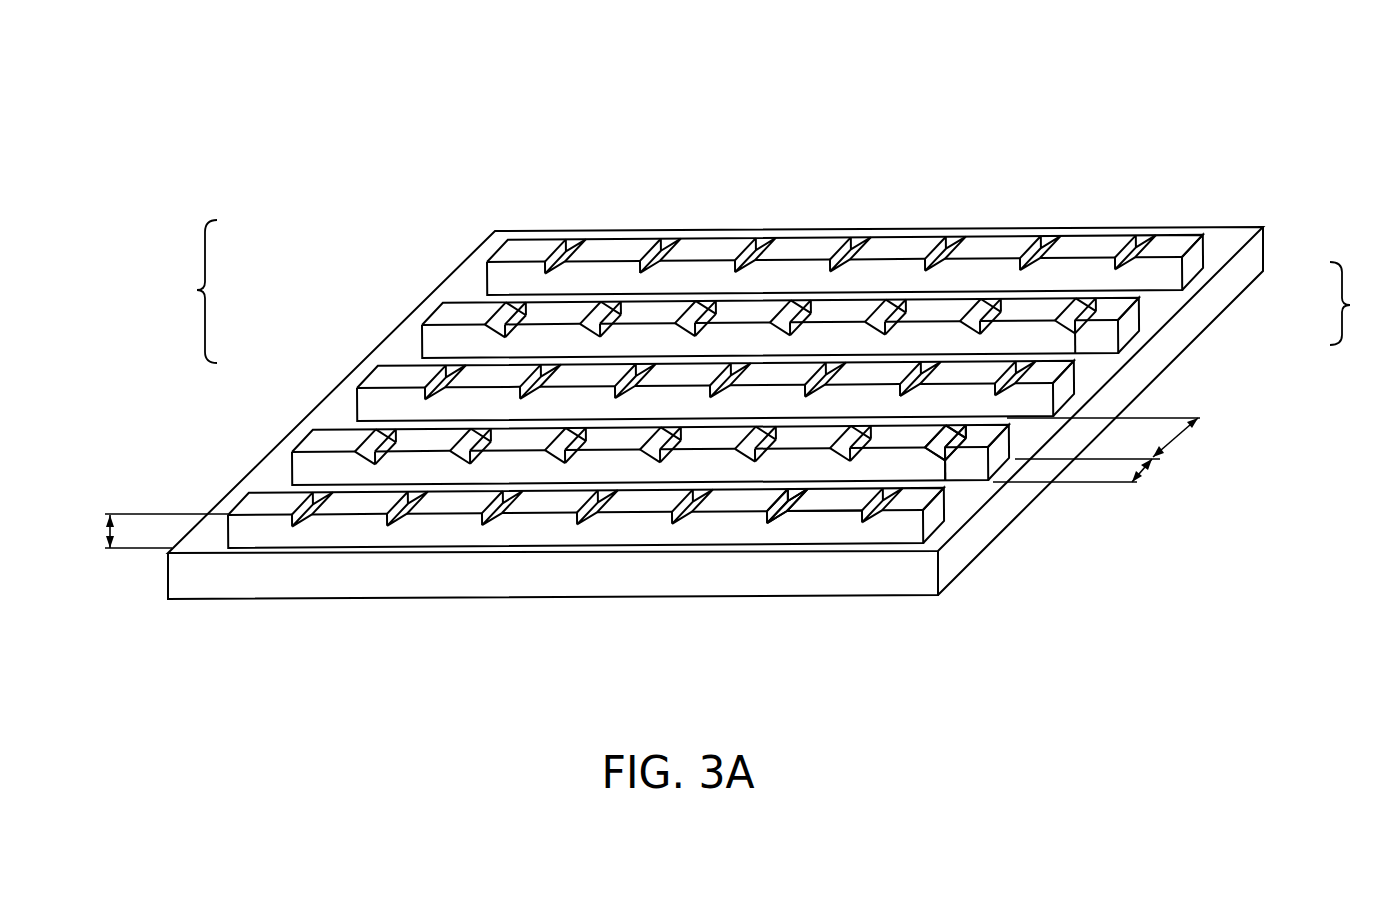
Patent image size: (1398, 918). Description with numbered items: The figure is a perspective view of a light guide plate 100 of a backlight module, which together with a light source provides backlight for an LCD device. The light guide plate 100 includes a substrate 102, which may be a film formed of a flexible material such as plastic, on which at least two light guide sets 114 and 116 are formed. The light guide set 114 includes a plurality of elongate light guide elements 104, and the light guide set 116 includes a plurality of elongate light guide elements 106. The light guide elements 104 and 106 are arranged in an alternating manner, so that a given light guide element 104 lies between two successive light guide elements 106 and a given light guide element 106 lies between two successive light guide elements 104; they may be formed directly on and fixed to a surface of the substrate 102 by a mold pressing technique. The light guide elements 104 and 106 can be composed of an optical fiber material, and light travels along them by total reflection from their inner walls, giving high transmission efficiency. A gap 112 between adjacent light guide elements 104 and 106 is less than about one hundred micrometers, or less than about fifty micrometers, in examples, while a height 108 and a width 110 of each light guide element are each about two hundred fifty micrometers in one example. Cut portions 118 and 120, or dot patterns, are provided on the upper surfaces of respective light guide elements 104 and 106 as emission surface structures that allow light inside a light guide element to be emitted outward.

The light guide plate 100 is at (280, 163).
The substrate 102 is at (480, 577).
The light guide element 104 is at (513, 252).
The light guide element 106 is at (1140, 310).
The height 108 is at (106, 533).
The width 110 is at (1140, 469).
The gap 112 is at (1173, 437).
The light guide set 114 is at (184, 291).
The light guide set 116 is at (1363, 303).
The cut portion 118 is at (770, 522).
The cut portion 120 is at (938, 450).